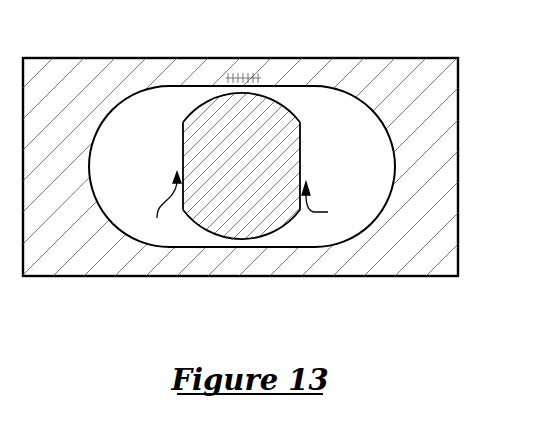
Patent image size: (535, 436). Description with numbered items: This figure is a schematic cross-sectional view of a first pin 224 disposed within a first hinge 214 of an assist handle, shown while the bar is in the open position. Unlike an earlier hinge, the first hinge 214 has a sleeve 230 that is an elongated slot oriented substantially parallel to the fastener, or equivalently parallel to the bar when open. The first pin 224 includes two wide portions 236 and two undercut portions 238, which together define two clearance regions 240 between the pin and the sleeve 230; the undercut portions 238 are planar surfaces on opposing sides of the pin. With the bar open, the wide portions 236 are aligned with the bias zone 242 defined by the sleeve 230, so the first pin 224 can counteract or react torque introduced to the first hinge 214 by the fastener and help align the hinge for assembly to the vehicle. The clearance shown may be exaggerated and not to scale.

The first hinge 214 is at (406, 72).
The first pin 224 is at (207, 100).
The sleeve 230 is at (289, 248).
The wide portions 236 is at (245, 98).
The undercut portions 238 is at (200, 167).
The clearance regions 240 is at (250, 208).
The bias zone 242 is at (244, 78).